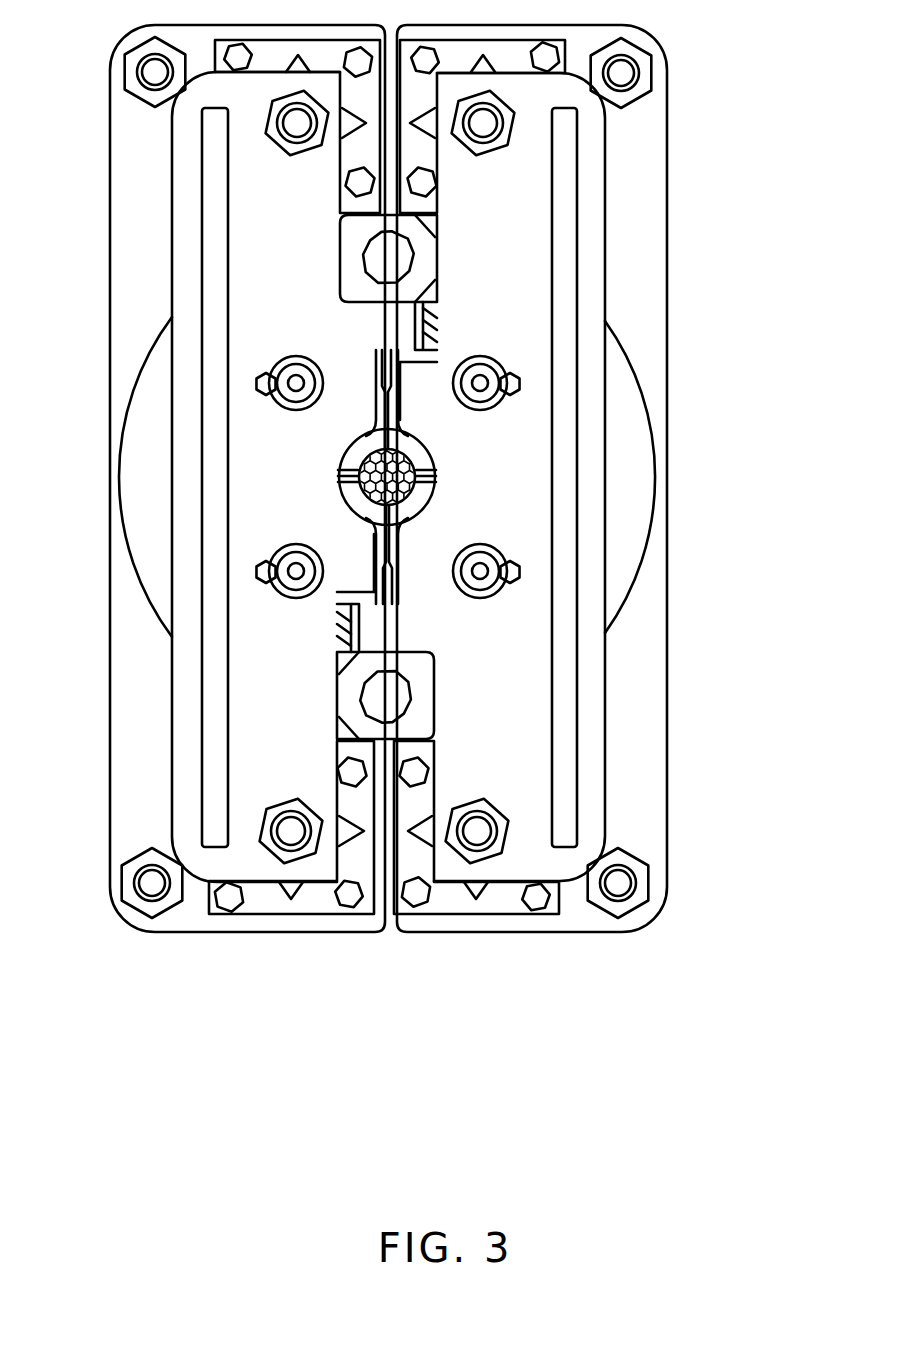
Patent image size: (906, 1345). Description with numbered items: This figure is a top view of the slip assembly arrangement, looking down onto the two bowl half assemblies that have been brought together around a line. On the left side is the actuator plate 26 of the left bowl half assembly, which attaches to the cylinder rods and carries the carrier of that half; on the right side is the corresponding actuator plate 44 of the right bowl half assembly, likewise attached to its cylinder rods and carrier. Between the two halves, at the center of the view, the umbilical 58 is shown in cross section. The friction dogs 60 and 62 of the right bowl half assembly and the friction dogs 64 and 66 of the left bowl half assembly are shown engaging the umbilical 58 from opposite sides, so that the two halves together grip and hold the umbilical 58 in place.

The actuator plate 26 is at (335, 342).
The actuator plate 44 is at (522, 355).
The umbilical 58 is at (405, 452).
The friction dog 60 is at (415, 458).
The friction dog 62 is at (435, 499).
The friction dog 64 is at (337, 455).
The friction dog 66 is at (337, 500).